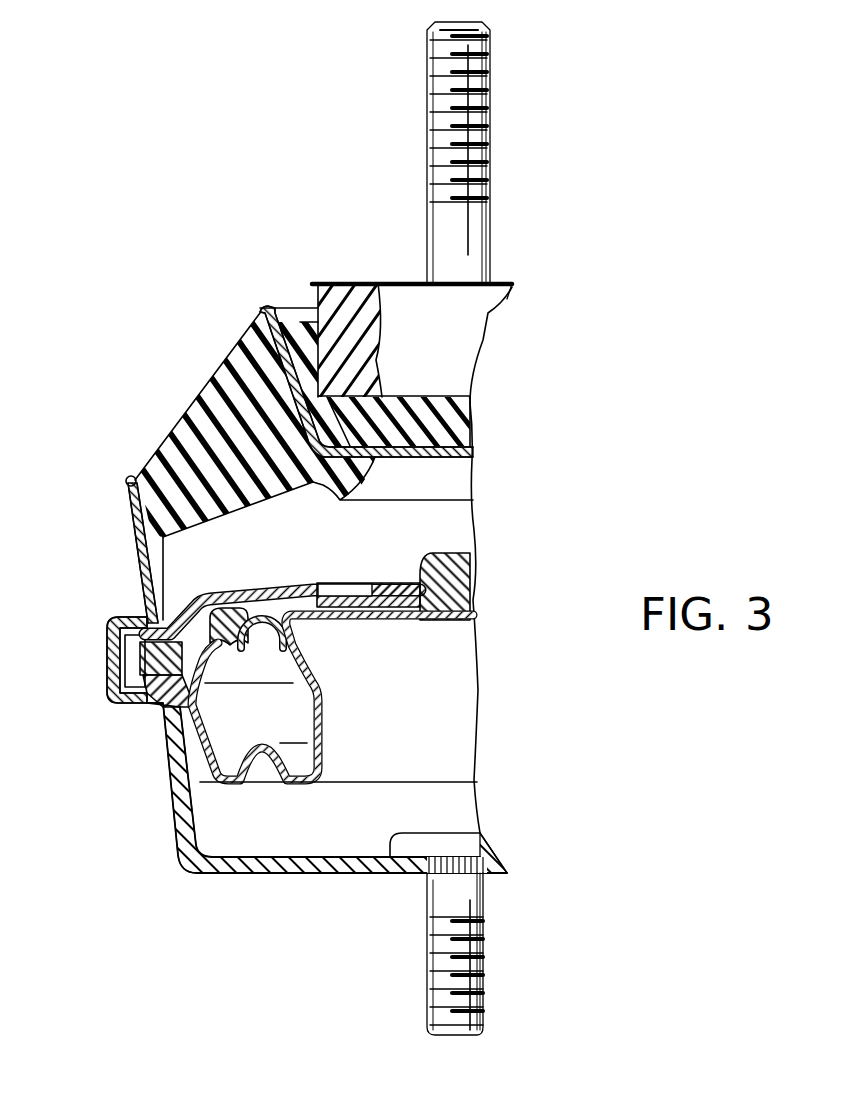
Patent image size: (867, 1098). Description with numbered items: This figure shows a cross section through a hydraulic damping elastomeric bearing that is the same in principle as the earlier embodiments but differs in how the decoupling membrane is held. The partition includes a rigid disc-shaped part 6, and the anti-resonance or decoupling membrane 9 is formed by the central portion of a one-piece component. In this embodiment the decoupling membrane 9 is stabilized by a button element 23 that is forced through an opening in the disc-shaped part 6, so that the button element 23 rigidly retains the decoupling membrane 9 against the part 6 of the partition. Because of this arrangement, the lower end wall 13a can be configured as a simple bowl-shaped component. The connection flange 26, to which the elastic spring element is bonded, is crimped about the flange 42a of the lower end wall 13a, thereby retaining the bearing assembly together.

The connection flange 26 is at (143, 532).
The flange of the lower end wall 42a is at (140, 681).
The lower end wall 13a is at (188, 822).
The disc-shaped part 6 is at (268, 585).
The button element 23 is at (455, 572).
The decoupling membrane 9 is at (370, 620).